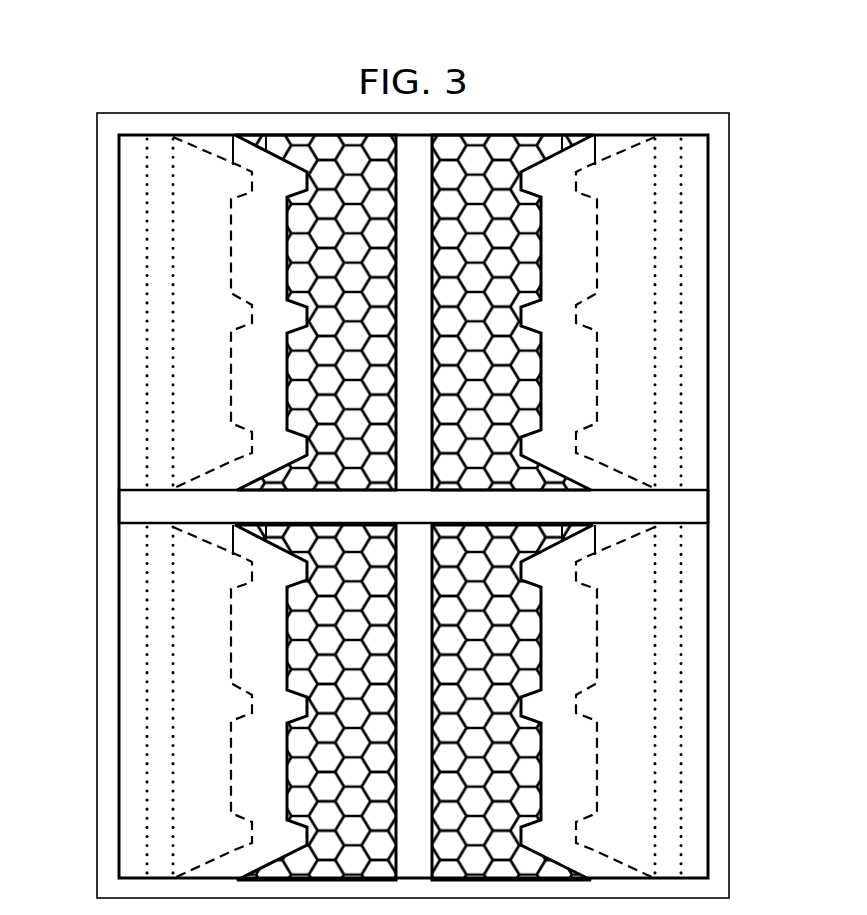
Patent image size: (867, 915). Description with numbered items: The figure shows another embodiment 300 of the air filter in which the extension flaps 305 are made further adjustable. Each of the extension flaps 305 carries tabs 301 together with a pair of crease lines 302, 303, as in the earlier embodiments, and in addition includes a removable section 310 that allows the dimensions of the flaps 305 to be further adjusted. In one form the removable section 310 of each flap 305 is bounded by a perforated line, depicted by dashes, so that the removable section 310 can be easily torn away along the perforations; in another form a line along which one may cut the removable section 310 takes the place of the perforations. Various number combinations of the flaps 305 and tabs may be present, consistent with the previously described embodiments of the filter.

The embodiment of the air filter 300 is at (276, 88).
The tabs 301 is at (233, 443).
The crease line 302 is at (147, 230).
The crease line 303 is at (172, 170).
The extension flaps 305 is at (132, 280).
The removable section 310 is at (238, 252).